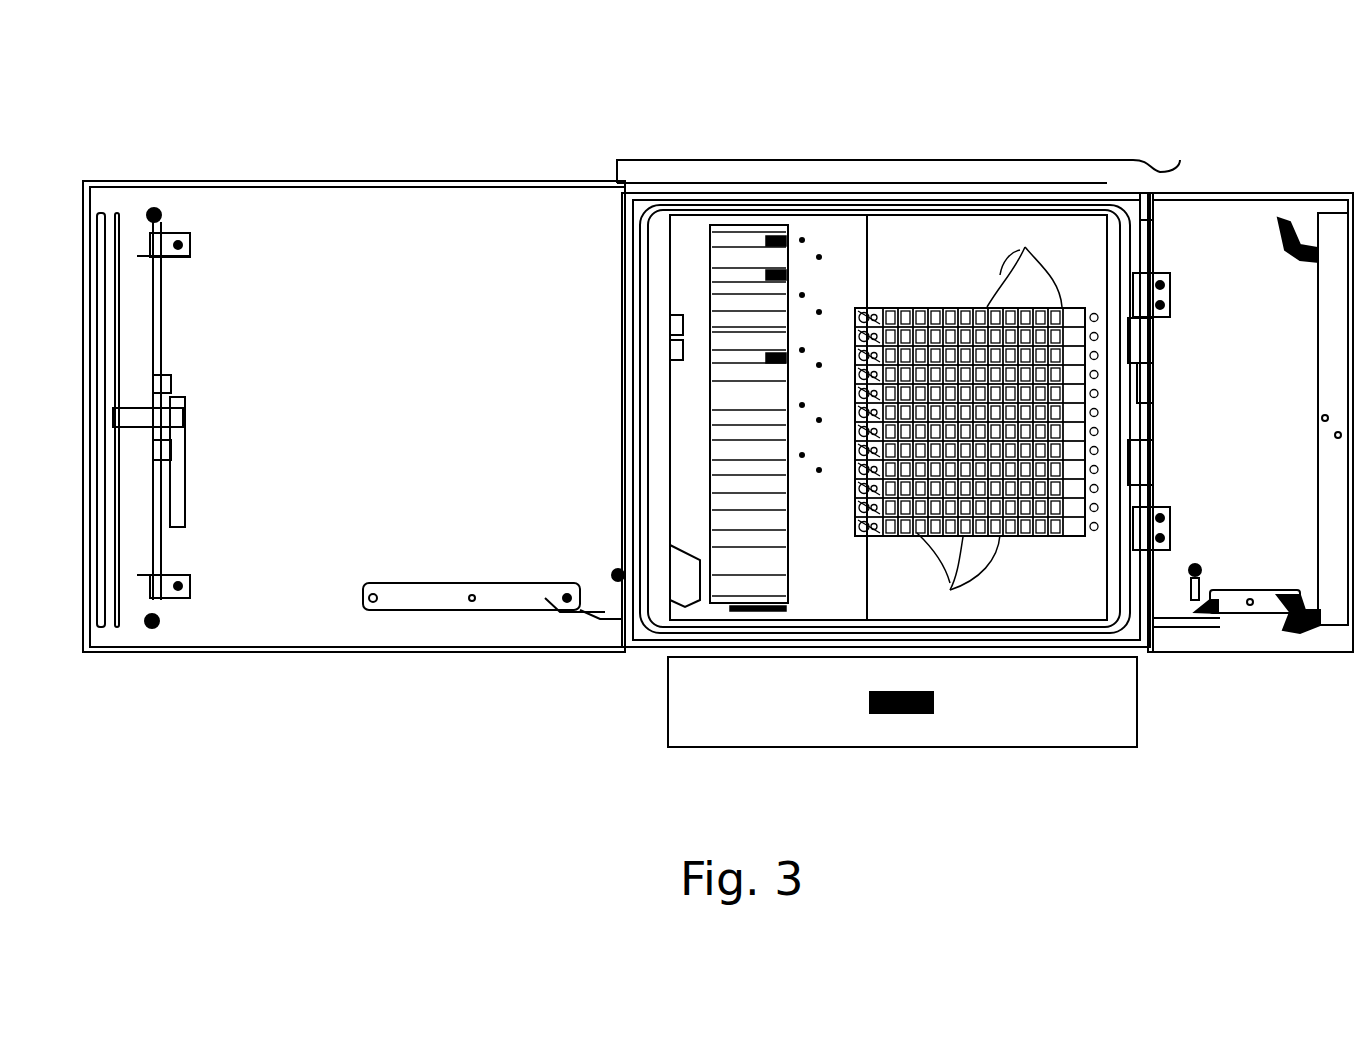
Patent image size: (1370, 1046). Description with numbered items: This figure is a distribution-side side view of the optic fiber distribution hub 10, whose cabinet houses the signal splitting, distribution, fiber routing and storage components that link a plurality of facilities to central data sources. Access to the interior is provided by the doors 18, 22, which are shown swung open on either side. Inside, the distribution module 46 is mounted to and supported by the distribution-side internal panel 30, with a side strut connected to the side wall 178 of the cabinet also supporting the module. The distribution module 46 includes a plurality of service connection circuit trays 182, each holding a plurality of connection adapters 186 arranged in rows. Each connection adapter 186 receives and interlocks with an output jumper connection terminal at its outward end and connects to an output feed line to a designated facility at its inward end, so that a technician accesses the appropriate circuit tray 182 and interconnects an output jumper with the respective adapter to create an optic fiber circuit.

The optic fiber distribution hub 10 is at (1033, 83).
The door 18 is at (275, 622).
The door 22 is at (1267, 643).
The distribution-side internal panel 30 is at (988, 597).
The distribution module 46 is at (960, 303).
The side wall 178 is at (1153, 217).
The service connection circuit tray 182 is at (1105, 360).
The connection adapter 186 is at (1025, 247).